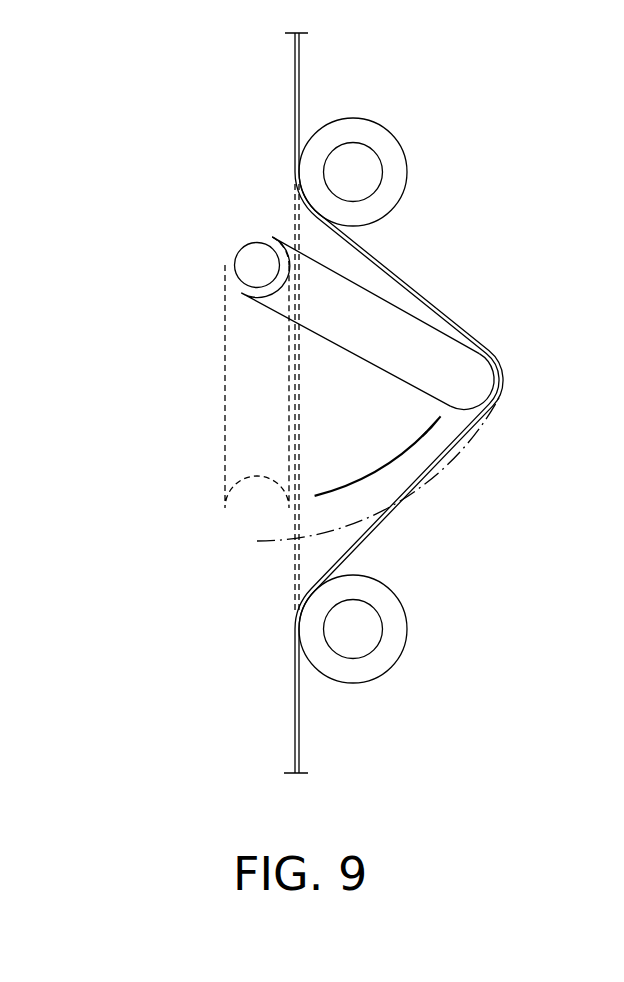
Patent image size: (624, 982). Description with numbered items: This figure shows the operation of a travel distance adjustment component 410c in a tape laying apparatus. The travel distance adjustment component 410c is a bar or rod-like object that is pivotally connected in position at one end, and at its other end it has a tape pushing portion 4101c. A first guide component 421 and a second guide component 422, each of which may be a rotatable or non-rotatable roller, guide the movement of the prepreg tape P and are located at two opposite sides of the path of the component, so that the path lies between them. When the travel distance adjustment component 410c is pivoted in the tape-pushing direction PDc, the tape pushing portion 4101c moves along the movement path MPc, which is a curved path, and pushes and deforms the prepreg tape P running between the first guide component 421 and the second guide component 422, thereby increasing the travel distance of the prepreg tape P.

The prepreg tape P is at (296, 62).
The first guide component 421 is at (400, 168).
The second guide component 422 is at (397, 637).
The travel distance adjustment component 410c is at (358, 342).
The tape pushing portion 4101c is at (495, 383).
The tape-pushing direction PDc is at (378, 456).
The movement path MPc is at (437, 473).